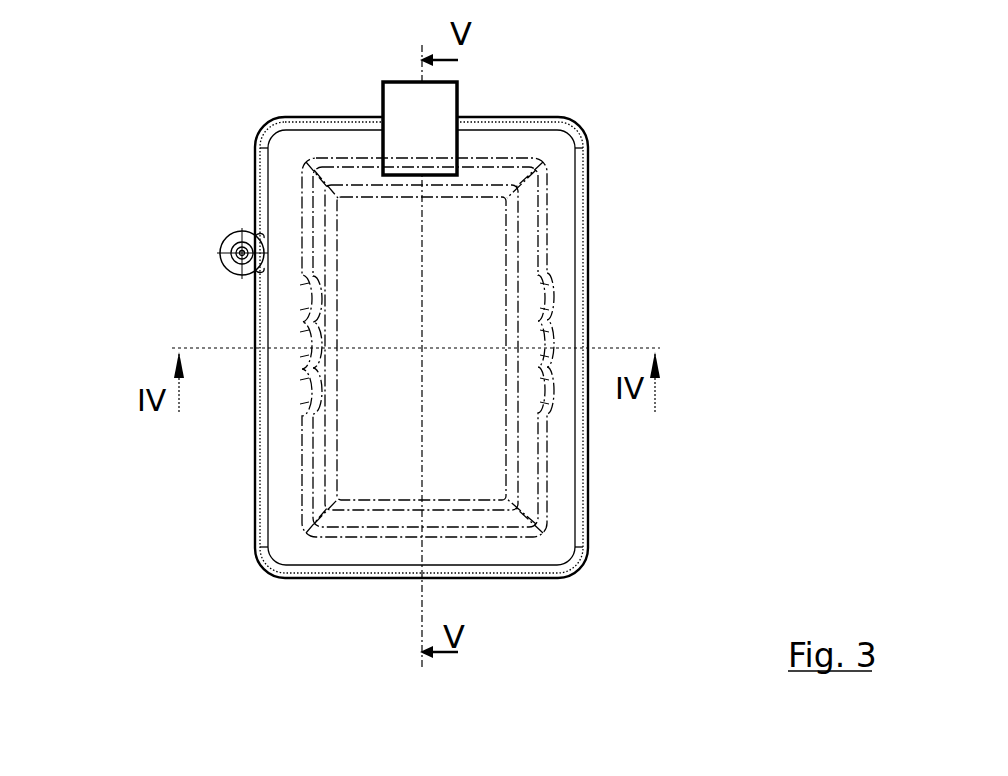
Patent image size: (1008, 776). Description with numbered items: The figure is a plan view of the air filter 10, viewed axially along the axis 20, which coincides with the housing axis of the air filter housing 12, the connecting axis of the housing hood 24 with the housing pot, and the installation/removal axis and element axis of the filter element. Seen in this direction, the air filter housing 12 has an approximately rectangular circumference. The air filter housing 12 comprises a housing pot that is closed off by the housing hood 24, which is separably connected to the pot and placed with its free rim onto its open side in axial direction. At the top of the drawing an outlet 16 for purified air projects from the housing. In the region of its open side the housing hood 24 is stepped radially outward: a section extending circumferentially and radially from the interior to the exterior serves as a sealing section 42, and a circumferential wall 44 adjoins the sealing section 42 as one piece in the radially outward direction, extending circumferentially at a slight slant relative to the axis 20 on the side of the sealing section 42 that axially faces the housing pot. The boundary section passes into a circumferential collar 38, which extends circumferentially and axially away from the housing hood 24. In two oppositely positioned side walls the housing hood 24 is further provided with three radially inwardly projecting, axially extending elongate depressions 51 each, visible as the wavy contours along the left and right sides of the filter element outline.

The air filter 10 is at (138, 113).
The air filter housing 12 is at (246, 532).
The outlet 16 is at (405, 112).
The axis 20 is at (420, 346).
The housing hood 24 is at (290, 210).
The collar 38 is at (587, 237).
The sealing section 42 is at (565, 465).
The circumferential wall 44 is at (578, 183).
The depressions 51 is at (305, 300).